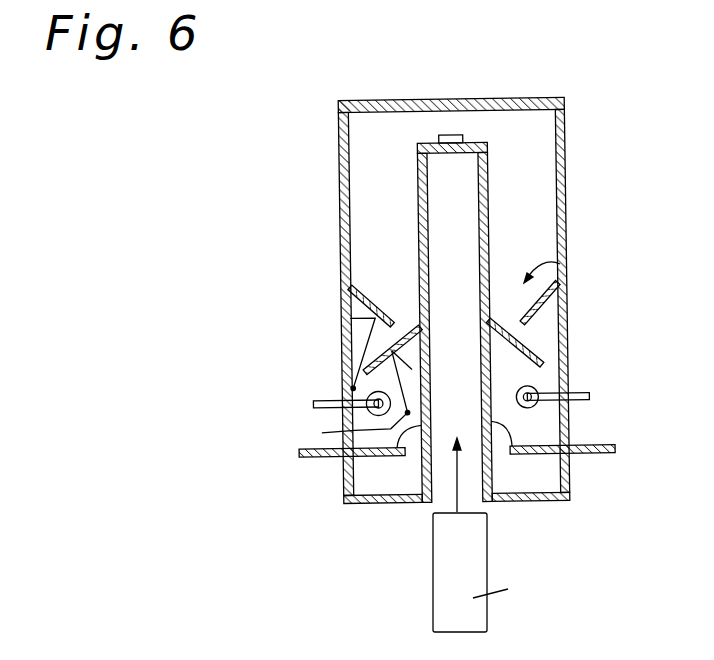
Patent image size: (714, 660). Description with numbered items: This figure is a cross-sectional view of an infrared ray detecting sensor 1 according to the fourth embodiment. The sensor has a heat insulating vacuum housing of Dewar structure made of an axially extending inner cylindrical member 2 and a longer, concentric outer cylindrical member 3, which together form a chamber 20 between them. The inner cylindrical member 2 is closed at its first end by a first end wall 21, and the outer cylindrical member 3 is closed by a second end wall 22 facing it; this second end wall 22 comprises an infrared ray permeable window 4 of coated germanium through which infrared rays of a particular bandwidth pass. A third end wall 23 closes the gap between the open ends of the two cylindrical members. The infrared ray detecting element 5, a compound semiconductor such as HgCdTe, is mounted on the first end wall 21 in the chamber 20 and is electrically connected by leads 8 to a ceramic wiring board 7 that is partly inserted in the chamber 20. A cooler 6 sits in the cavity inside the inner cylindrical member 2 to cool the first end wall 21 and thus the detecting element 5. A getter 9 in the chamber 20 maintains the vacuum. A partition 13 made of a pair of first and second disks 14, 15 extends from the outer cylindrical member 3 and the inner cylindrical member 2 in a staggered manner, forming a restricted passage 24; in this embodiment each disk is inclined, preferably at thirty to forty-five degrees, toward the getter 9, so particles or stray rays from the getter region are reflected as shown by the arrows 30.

The infrared ray detecting sensor 1 is at (484, 300).
The inner cylindrical member 2 is at (488, 239).
The outer cylindrical member 3 is at (568, 171).
The infrared ray permeable window 4 is at (517, 99).
The infrared ray detecting element 5 is at (452, 134).
The cooler 6 is at (433, 557).
The ceramic wiring board 7 is at (585, 445).
The leads 8 is at (512, 433).
The getter 9 is at (537, 390).
The partition 13 is at (560, 264).
The first disk 14 is at (568, 312).
The second disk 15 is at (543, 358).
The chamber 20 is at (533, 200).
The first end wall 21 is at (433, 143).
The second end wall 22 is at (373, 100).
The third end wall 23 is at (372, 505).
The restricted passage 24 is at (418, 328).
The arrows 30 is at (350, 387).